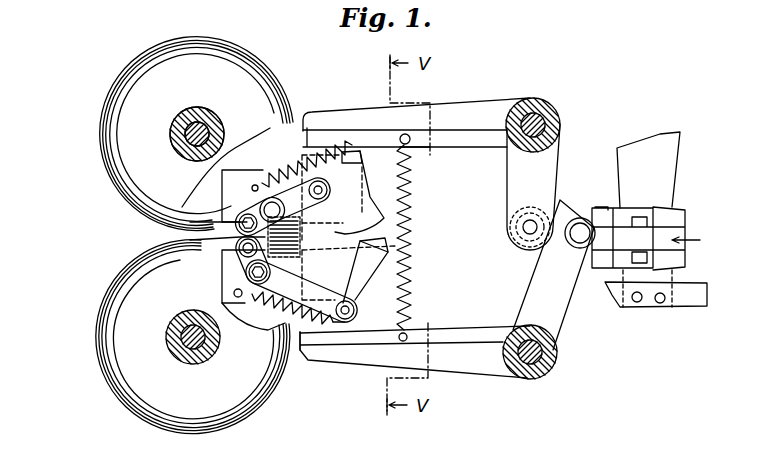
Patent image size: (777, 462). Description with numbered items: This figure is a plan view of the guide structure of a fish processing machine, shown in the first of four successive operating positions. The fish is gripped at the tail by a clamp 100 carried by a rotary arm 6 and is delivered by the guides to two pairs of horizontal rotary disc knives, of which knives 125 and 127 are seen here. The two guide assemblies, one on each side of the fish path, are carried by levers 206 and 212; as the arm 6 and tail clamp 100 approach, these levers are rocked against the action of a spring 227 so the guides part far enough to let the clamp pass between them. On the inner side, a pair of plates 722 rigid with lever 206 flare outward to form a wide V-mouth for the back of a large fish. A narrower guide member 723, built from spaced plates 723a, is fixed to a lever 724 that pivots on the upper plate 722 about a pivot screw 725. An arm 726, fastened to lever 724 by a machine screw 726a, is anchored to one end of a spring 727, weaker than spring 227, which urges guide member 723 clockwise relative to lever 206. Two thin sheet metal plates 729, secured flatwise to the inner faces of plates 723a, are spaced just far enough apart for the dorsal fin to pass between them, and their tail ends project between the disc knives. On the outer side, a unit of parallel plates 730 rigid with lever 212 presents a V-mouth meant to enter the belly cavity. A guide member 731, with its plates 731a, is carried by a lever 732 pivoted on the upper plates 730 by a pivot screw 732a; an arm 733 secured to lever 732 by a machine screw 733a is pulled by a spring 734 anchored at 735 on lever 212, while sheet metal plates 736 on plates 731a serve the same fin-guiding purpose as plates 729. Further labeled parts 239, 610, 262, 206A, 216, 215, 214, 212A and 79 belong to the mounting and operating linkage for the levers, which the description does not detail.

The rotary disc knife 127 is at (97, 150).
The wheel hub 239 is at (192, 112).
The axle 610 is at (213, 122).
The hub bearing 262 is at (173, 125).
The arm 726 is at (254, 186).
The machine screw 726a is at (242, 220).
The pivot screw 725 is at (240, 222).
The spring 727 is at (308, 118).
The pivot screw 732a is at (240, 243).
The sheet metal plates 736 is at (227, 269).
The arm 733 is at (236, 282).
The machine screw 733a is at (245, 283).
The rotary disc knife 125 is at (157, 427).
The spring 734 is at (280, 365).
The spring anchor 735 is at (358, 342).
The guide plates 722 is at (300, 300).
The lever 724 is at (352, 219).
The guide plates 723a is at (361, 158).
The guide member 723 is at (375, 225).
The sheet metal plates 729 is at (363, 192).
The spring 227 is at (408, 160).
The guide plates 730 is at (386, 248).
The lever 732 is at (412, 281).
The guide member 731 is at (371, 291).
The guide plates 731a is at (348, 320).
The lever 206 is at (462, 117).
The upper arm pivot pin 206A is at (535, 118).
The vertical link 216 is at (515, 201).
The pivot 215 is at (518, 238).
The diagonal link 214 is at (528, 303).
The lower arm pivot pin 212A is at (549, 365).
The lever 212 is at (468, 365).
The rotary arm 6 is at (635, 163).
The tail clamp 100 is at (634, 202).
The mounting plate 79 is at (628, 312).